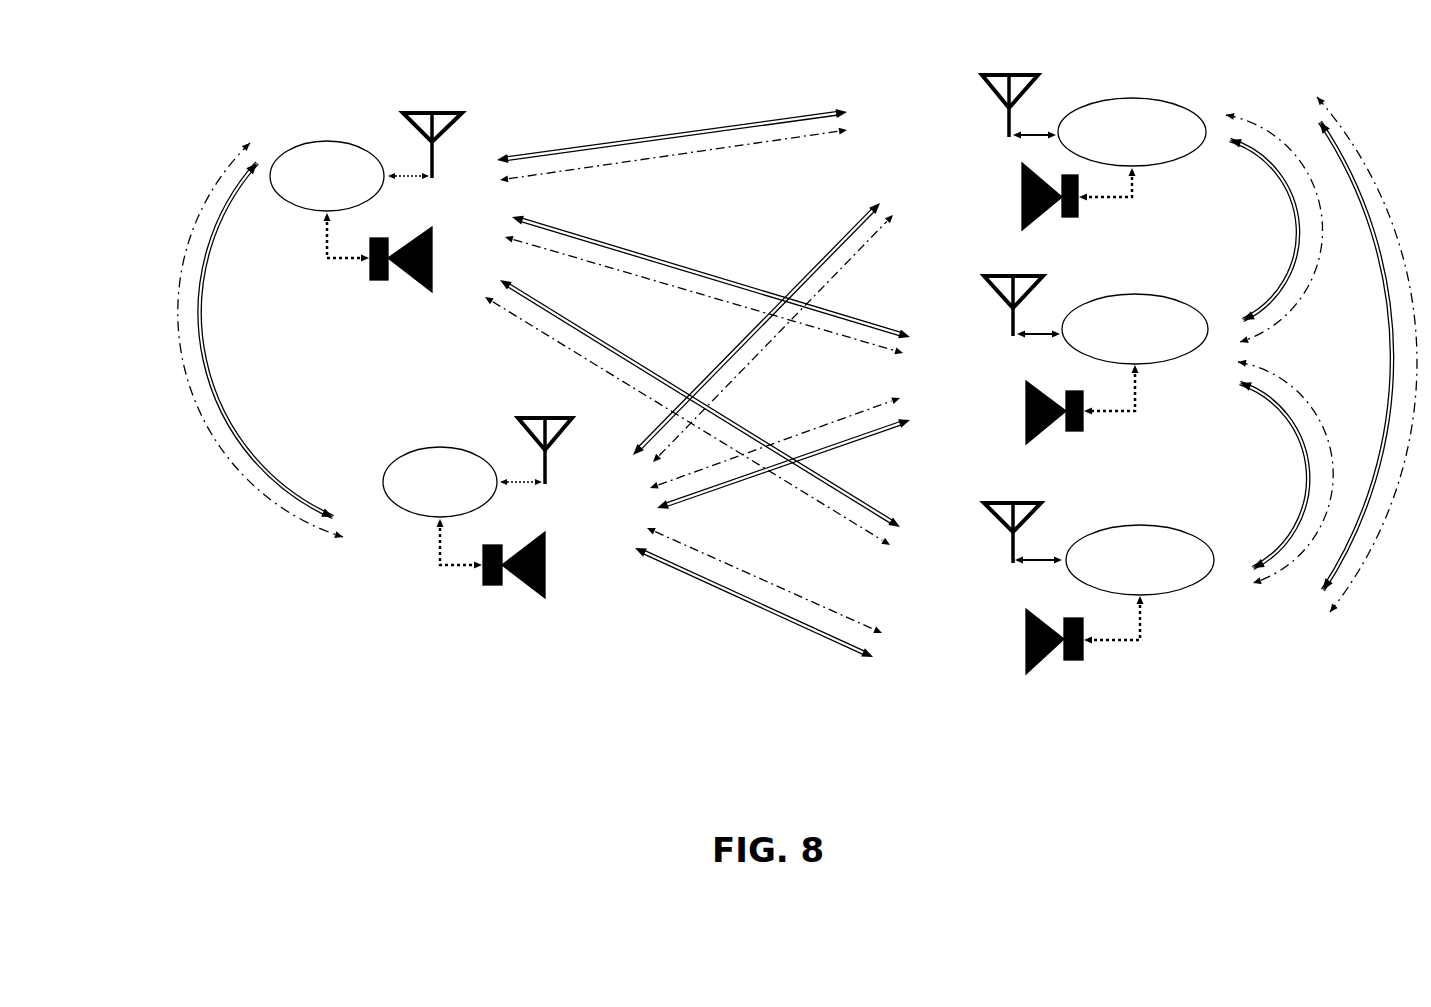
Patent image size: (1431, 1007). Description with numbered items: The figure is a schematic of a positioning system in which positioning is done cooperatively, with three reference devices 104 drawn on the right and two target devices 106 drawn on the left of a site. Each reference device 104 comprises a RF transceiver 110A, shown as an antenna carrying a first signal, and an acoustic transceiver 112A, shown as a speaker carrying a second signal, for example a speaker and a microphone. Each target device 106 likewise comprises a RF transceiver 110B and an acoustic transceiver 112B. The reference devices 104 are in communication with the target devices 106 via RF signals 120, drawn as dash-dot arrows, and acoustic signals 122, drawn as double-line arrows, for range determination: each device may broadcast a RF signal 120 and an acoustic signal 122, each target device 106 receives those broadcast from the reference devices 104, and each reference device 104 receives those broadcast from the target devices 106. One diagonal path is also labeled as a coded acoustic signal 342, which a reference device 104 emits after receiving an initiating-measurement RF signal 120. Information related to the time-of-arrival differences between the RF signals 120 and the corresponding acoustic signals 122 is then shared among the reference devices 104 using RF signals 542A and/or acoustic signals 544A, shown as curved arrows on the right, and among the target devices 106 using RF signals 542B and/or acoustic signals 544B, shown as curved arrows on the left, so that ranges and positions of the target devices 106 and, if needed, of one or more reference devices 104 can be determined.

The reference device 104 is at (1147, 98).
The target device 106 is at (313, 142).
The RF transceiver 110A is at (982, 78).
The RF transceiver 110B is at (462, 113).
The acoustic transceiver 112A is at (1078, 212).
The acoustic transceiver 112B is at (370, 278).
The RF signal 120 is at (707, 153).
The acoustic signal 122 is at (633, 142).
The coded acoustic signal 342 is at (885, 435).
The RF signal 542A is at (1300, 240).
The acoustic signal 544A is at (1250, 117).
The RF signal 542B is at (203, 330).
The acoustic signal 544B is at (207, 180).